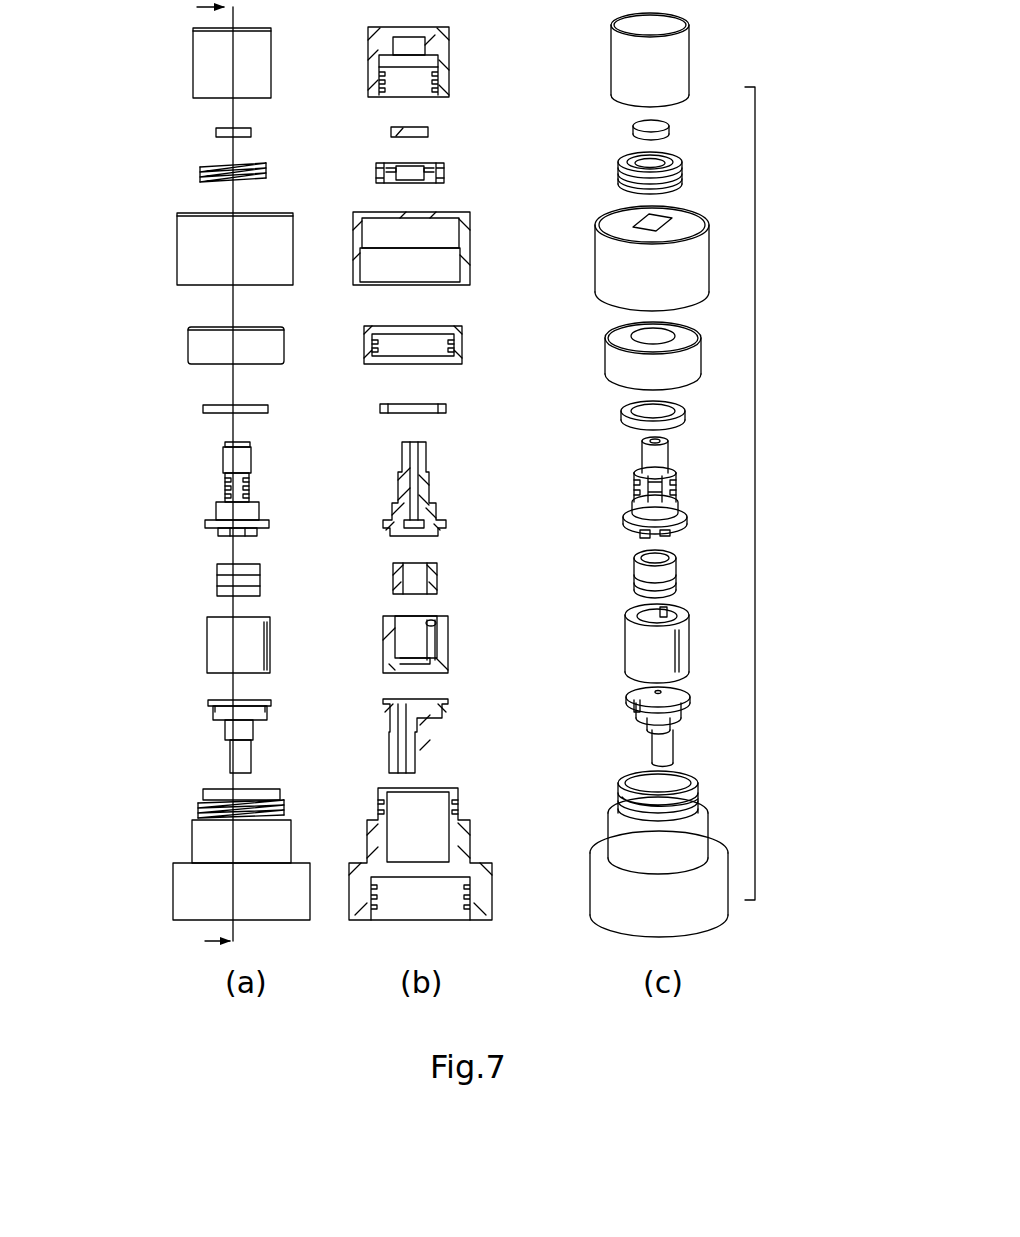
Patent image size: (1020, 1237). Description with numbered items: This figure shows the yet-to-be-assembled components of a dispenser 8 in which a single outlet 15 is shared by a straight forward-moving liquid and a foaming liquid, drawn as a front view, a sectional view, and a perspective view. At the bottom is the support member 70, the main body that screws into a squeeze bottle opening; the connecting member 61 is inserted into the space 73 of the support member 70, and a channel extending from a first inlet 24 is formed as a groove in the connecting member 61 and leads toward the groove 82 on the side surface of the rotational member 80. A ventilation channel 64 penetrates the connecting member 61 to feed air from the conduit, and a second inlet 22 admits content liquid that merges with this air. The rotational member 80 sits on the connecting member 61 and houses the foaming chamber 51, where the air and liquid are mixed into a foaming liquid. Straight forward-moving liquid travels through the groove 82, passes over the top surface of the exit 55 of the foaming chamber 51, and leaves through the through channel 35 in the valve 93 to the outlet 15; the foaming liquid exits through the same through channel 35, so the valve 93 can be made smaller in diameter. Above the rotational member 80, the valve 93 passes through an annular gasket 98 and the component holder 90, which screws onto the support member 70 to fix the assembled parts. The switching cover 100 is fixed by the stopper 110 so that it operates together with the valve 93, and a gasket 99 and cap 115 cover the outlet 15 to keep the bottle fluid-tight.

The dispenser 8 is at (755, 463).
The outlet 15 is at (412, 440).
The second inlet 22 is at (422, 728).
The first inlet 24 is at (638, 724).
The through channel 35 is at (415, 488).
The foaming chamber 51 is at (630, 577).
The exit 55 is at (413, 560).
The connecting member 61 is at (205, 738).
The ventilation channel 64 is at (405, 758).
The support member 70 is at (184, 848).
The space 73 is at (428, 840).
The rotational member 80 is at (205, 647).
The groove 82 is at (680, 660).
The component holder 90 is at (602, 360).
The valve 93 is at (628, 485).
The annular gasket 98 is at (618, 418).
The gasket 99 is at (629, 133).
The switching cover 100 is at (592, 263).
The stopper 110 is at (614, 173).
The cap 115 is at (606, 63).